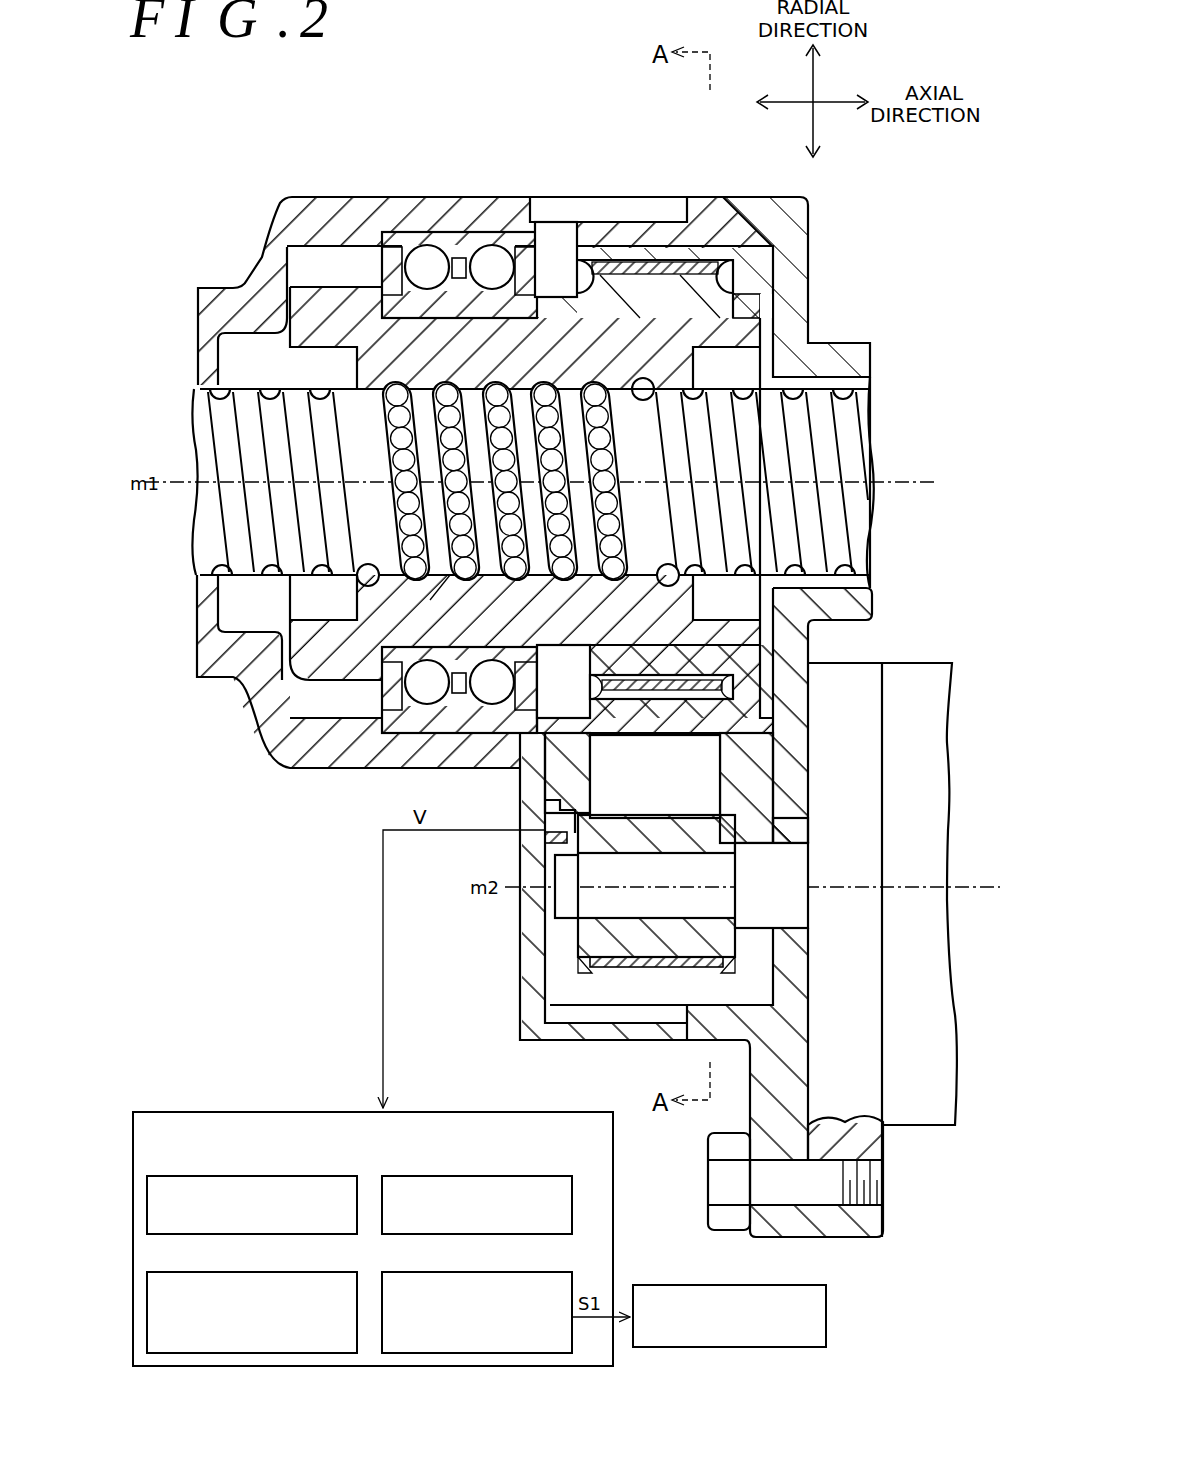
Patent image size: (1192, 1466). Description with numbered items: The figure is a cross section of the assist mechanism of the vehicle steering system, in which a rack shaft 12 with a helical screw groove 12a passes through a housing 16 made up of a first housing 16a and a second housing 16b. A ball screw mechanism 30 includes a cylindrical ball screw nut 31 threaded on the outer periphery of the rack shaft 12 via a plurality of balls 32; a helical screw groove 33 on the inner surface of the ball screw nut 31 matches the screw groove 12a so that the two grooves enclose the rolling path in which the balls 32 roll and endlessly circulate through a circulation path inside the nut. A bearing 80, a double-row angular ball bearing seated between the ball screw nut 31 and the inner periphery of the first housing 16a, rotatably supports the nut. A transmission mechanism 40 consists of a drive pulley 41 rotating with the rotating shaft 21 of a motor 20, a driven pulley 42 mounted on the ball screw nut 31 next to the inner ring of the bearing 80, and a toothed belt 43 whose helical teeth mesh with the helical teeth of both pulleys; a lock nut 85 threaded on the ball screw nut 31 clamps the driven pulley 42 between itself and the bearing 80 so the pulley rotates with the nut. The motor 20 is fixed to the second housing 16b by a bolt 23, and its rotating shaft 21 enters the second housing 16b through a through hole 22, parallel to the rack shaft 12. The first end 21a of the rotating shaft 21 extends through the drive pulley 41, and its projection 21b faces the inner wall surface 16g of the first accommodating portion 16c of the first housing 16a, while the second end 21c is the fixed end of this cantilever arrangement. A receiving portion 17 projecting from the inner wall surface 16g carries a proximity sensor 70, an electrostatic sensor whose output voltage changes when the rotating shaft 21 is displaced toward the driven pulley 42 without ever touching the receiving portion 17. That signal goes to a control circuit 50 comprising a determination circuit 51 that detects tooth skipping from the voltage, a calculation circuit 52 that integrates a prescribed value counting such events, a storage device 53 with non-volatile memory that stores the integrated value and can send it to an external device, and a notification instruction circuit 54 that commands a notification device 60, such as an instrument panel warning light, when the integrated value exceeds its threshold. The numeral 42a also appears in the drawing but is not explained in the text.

The rack shaft 12 is at (498, 479).
The screw groove 12a is at (248, 440).
The housing 16 is at (534, 631).
The first housing 16a is at (722, 145).
The second housing 16b is at (697, 197).
The first accommodating portion 16c is at (619, 946).
The inner wall surface 16g is at (530, 1012).
The receiving portion 17 is at (565, 805).
The motor 20 is at (947, 1128).
The rotating shaft 21 is at (662, 909).
The first end 21a is at (719, 909).
The projection 21b is at (555, 905).
The second end 21c is at (790, 905).
The through hole 22 is at (790, 825).
The bolt 23 is at (708, 1180).
The ball screw mechanism 30 is at (523, 551).
The ball screw nut 31 is at (252, 695).
The balls 32 is at (540, 560).
The screw groove 33 is at (470, 565).
The transmission mechanism 40 is at (699, 748).
The drive pulley 41 is at (736, 948).
The driven pulley 42 is at (577, 229).
The sensor holder 42a is at (578, 275).
The toothed belt 43 is at (697, 780).
The control circuit 50 is at (373, 1210).
The determination circuit 51 is at (325, 1176).
The calculation circuit 52 is at (325, 1272).
The storage device 53 is at (530, 1176).
The notification instruction circuit 54 is at (530, 1272).
The notification device 60 is at (826, 1316).
The proximity sensor 70 is at (548, 838).
The bearing 80 is at (393, 738).
The lock nut 85 is at (770, 295).